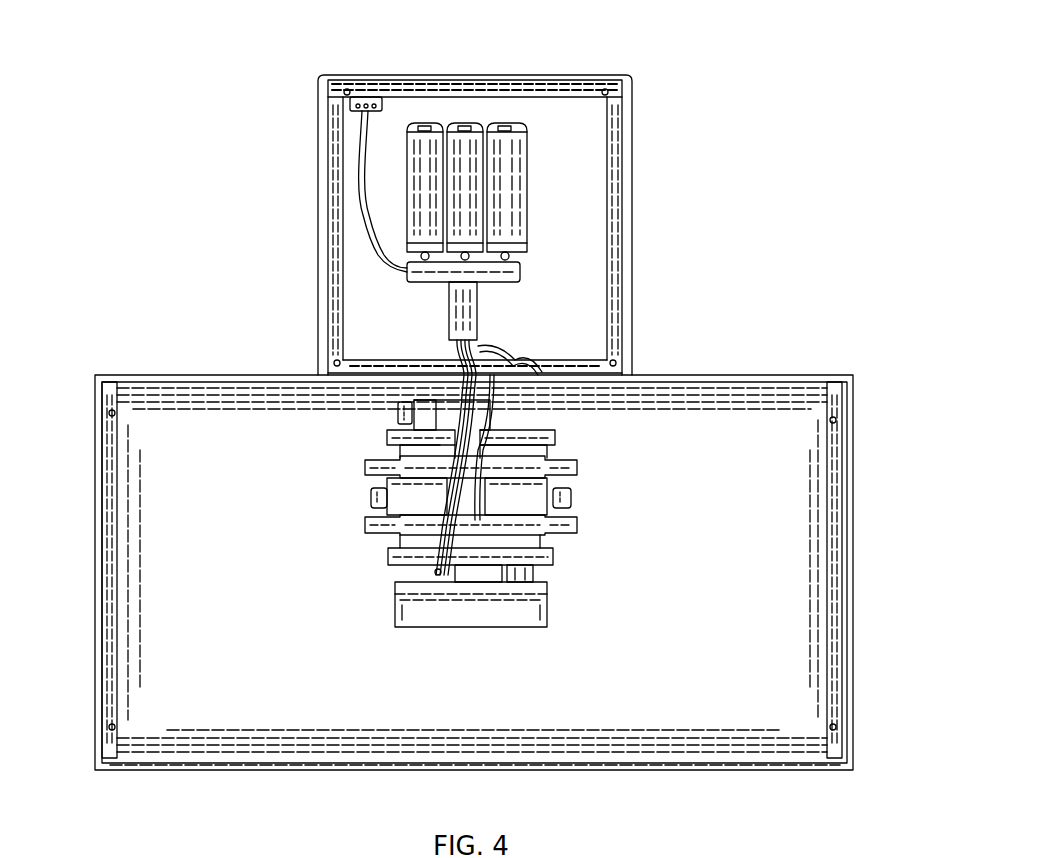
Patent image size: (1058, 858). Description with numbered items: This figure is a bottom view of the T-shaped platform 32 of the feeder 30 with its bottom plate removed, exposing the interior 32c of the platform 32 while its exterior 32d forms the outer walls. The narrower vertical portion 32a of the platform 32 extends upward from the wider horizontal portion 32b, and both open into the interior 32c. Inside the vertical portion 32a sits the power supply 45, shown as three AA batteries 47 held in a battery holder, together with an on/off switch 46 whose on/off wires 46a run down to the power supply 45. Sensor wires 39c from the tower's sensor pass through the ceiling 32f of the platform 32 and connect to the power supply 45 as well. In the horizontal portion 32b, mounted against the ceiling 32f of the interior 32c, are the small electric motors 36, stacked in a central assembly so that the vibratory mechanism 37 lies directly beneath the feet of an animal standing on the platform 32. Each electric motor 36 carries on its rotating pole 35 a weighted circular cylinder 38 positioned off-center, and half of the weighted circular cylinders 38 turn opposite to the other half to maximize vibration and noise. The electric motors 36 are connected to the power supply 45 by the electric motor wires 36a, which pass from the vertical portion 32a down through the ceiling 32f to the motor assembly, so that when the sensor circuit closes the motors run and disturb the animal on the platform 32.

The feeder 30 is at (727, 50).
The platform 32 is at (605, 75).
The vertical portion 32a is at (632, 218).
The horizontal portion 32b is at (852, 500).
The interior 32c is at (605, 145).
The exterior 32d is at (320, 182).
The ceiling 32f is at (600, 270).
The rotating pole 35 is at (400, 430).
The electric motor 36 is at (428, 410).
The electric motor wires 36a is at (458, 355).
The vibratory mechanism 37 is at (465, 463).
The weighted circular cylinder 38 is at (398, 410).
The sensor wires 39c is at (480, 348).
The power supply 45 is at (505, 125).
The on/off switch 46 is at (358, 100).
The on/off wires 46a is at (380, 112).
The AA batteries 47 is at (425, 140).